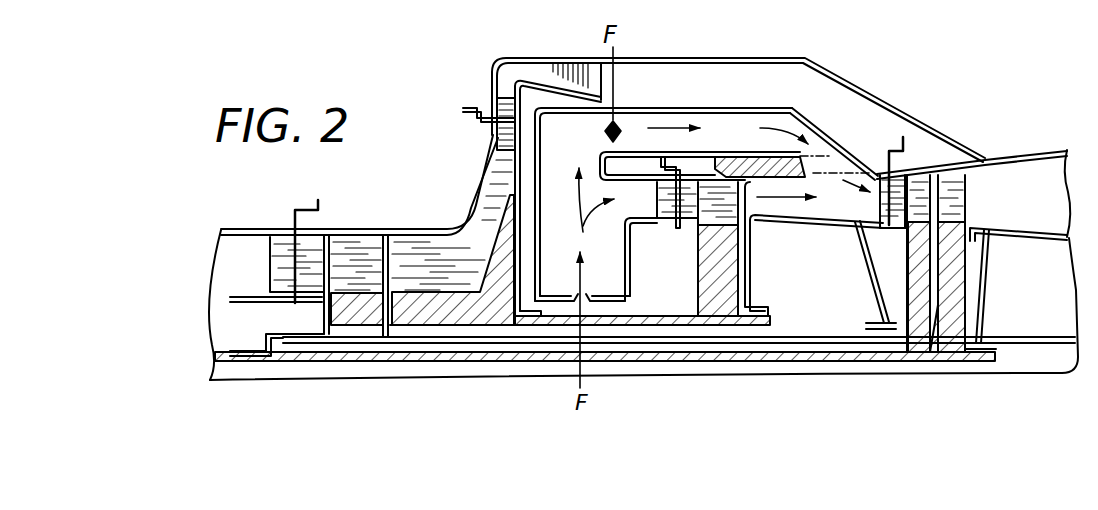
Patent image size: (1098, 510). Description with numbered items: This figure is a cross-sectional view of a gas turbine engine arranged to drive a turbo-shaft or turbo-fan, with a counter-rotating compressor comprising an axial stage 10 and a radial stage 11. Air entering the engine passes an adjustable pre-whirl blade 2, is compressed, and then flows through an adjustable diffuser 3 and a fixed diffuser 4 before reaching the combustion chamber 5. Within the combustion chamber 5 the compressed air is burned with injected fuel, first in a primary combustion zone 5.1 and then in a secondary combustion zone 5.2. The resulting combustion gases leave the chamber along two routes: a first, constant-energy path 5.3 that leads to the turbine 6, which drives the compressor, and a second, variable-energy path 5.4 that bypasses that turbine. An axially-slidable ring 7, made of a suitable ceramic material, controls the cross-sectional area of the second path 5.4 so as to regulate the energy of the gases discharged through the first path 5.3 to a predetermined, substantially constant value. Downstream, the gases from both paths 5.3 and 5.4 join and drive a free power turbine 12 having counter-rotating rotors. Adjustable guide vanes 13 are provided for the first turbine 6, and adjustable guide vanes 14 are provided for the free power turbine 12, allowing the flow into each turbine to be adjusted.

The adjustable pre-whirl blade 2 is at (272, 262).
The adjustable diffuser 3 is at (493, 106).
The fixed diffuser 4 is at (547, 78).
The combustion chamber 5 is at (557, 153).
The primary combustion zone 5.1 is at (618, 288).
The secondary combustion zone 5.2 is at (645, 120).
The first, constant-energy path 5.3 is at (628, 198).
The second, variable-energy path 5.4 is at (833, 165).
The turbine 6 is at (723, 275).
The axially-slidable ring 7 is at (747, 165).
The axial stage 10 is at (347, 245).
The radial stage 11 is at (450, 250).
The free power turbine 12 is at (950, 328).
The adjustable guide vanes 13 is at (677, 227).
The adjustable guide vanes 14 is at (897, 183).